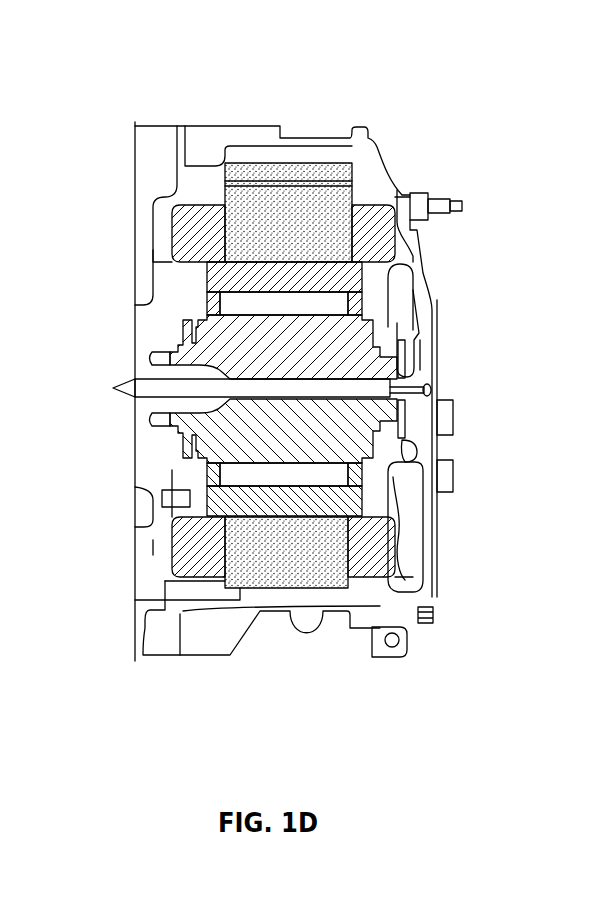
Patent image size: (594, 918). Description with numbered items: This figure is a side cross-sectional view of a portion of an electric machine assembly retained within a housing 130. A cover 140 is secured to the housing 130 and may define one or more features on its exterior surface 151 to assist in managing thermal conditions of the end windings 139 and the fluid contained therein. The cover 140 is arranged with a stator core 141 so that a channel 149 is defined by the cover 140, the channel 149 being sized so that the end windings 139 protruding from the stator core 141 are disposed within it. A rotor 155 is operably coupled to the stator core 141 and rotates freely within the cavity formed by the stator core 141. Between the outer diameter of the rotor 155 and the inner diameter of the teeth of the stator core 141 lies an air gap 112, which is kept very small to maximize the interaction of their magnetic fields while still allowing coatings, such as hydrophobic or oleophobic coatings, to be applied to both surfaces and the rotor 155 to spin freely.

The housing 130 is at (188, 126).
The stator core 141 is at (287, 207).
The end windings 139 is at (182, 235).
The channel 149 is at (158, 253).
The air gap 112 is at (290, 262).
The cover 140 is at (426, 353).
The exterior surface 151 is at (436, 379).
The rotor 155 is at (138, 420).